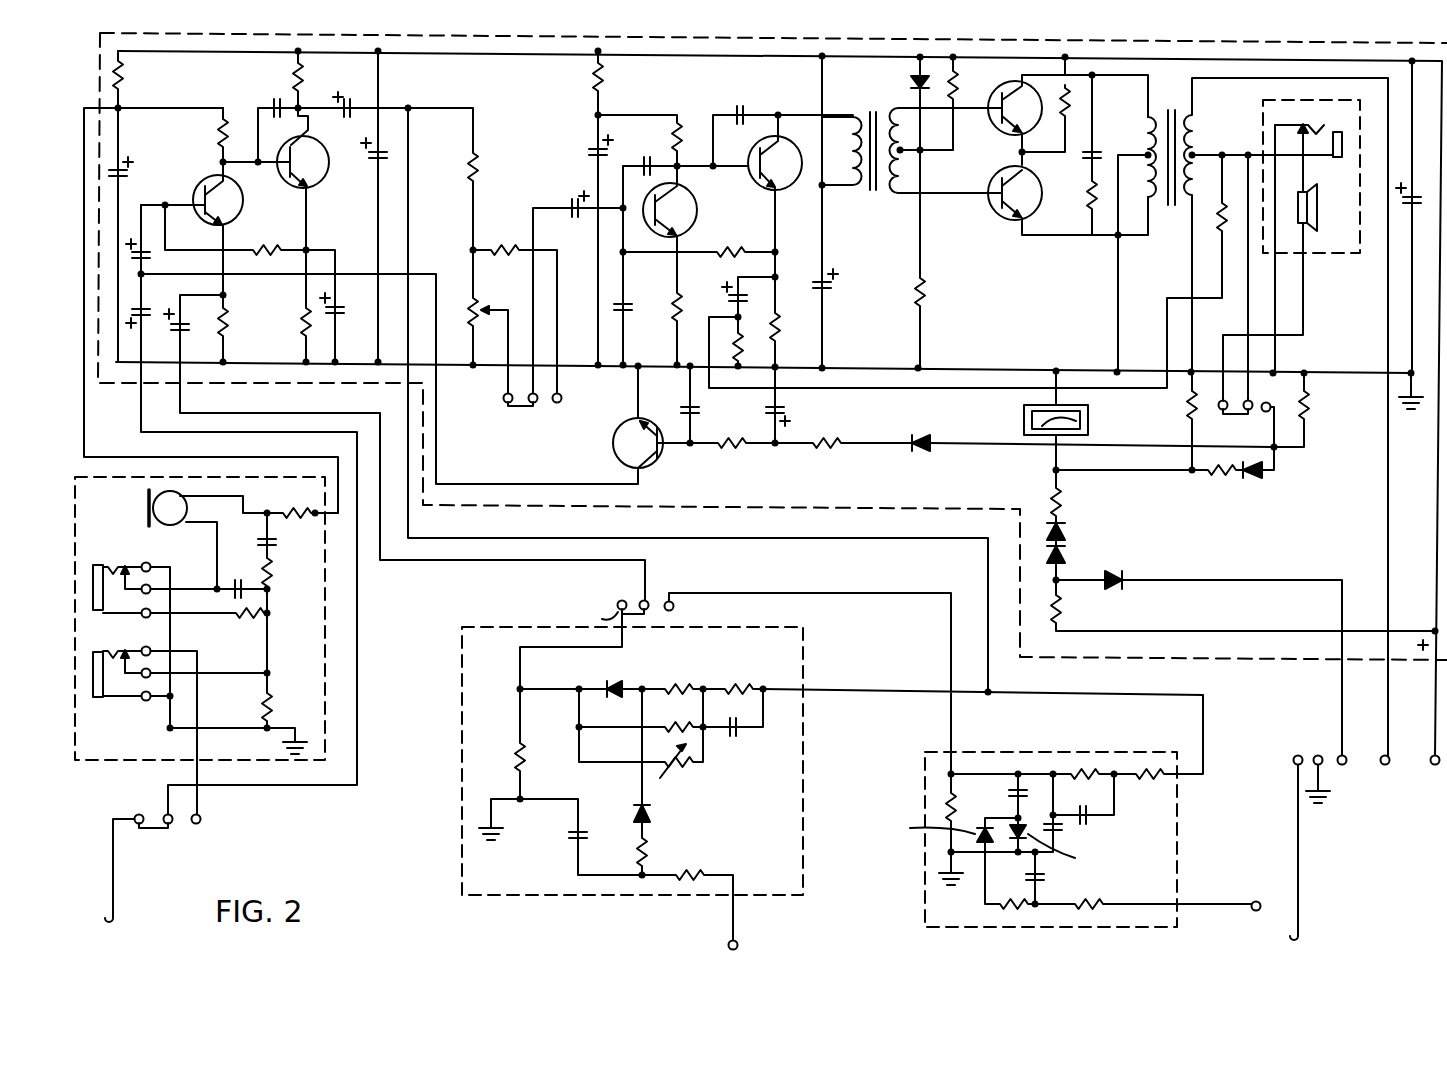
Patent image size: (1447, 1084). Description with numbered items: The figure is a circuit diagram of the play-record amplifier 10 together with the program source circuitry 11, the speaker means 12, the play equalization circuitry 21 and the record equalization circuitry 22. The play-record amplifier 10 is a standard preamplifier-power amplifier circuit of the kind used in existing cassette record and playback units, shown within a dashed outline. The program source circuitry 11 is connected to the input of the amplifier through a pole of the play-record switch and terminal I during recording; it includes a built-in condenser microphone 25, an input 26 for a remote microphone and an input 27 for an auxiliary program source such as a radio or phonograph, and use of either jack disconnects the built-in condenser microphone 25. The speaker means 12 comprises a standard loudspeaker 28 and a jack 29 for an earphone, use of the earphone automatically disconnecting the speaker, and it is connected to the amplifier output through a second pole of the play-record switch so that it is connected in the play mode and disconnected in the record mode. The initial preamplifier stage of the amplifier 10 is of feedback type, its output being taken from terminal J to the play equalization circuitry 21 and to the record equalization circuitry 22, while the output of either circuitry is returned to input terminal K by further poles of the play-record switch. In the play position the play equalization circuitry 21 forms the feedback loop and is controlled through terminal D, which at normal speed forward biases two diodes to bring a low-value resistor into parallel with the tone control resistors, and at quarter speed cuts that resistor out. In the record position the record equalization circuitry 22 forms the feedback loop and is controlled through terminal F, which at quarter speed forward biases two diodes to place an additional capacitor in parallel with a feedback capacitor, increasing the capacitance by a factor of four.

The play-record amplifier 10 is at (1278, 659).
The program source circuitry 11 is at (296, 762).
The speaker means 12 is at (1335, 255).
The play equalization circuitry 21 is at (462, 882).
The record equalization circuitry 22 is at (925, 920).
The condenser microphone 25 is at (167, 523).
The input for a remote microphone 26 is at (106, 702).
The input for an auxiliary program source 27 is at (126, 613).
The loudspeaker 28 is at (1318, 226).
The jack 29 is at (1331, 161).